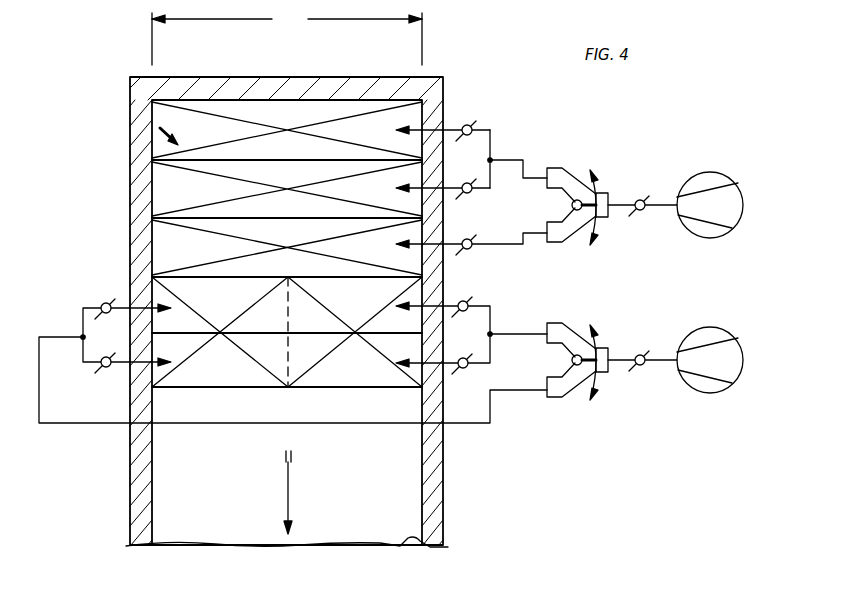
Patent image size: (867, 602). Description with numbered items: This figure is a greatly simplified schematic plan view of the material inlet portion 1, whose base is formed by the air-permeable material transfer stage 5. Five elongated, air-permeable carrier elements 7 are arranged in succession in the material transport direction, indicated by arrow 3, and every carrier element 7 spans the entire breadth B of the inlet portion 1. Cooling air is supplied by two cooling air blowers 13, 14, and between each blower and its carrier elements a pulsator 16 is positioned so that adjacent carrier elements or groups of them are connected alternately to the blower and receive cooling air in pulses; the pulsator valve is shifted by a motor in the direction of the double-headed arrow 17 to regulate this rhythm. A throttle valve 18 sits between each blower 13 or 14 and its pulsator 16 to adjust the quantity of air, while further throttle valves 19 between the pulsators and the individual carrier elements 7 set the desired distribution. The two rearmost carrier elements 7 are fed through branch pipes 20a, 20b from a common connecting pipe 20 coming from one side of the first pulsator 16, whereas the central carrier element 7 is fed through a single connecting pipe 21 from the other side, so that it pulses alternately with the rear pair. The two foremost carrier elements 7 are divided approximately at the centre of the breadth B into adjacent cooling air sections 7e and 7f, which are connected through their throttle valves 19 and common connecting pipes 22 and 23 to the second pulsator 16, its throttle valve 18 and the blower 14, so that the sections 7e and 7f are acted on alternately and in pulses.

The inlet portion 1 is at (130, 97).
The breadth of the inlet portion B is at (287, 38).
The material transport direction 3 is at (289, 490).
The material transfer stage 5 is at (313, 118).
The carrier element 7 is at (163, 146).
The cooling air section 7e is at (251, 373).
The cooling air section 7f is at (372, 367).
The cooling air blower 13 is at (703, 173).
The cooling air blower 14 is at (697, 330).
The pulsator 16 is at (562, 167).
The double-headed arrow 17 is at (598, 177).
The throttle valve 18 is at (640, 212).
The throttle valve 19 is at (470, 180).
The common connecting pipe 20 is at (523, 158).
The branch pipe 20a is at (490, 128).
The branch pipe 20b is at (490, 190).
The connecting pipe 21 is at (521, 248).
The common connecting pipe 22 is at (517, 332).
The common connecting pipe 23 is at (490, 424).